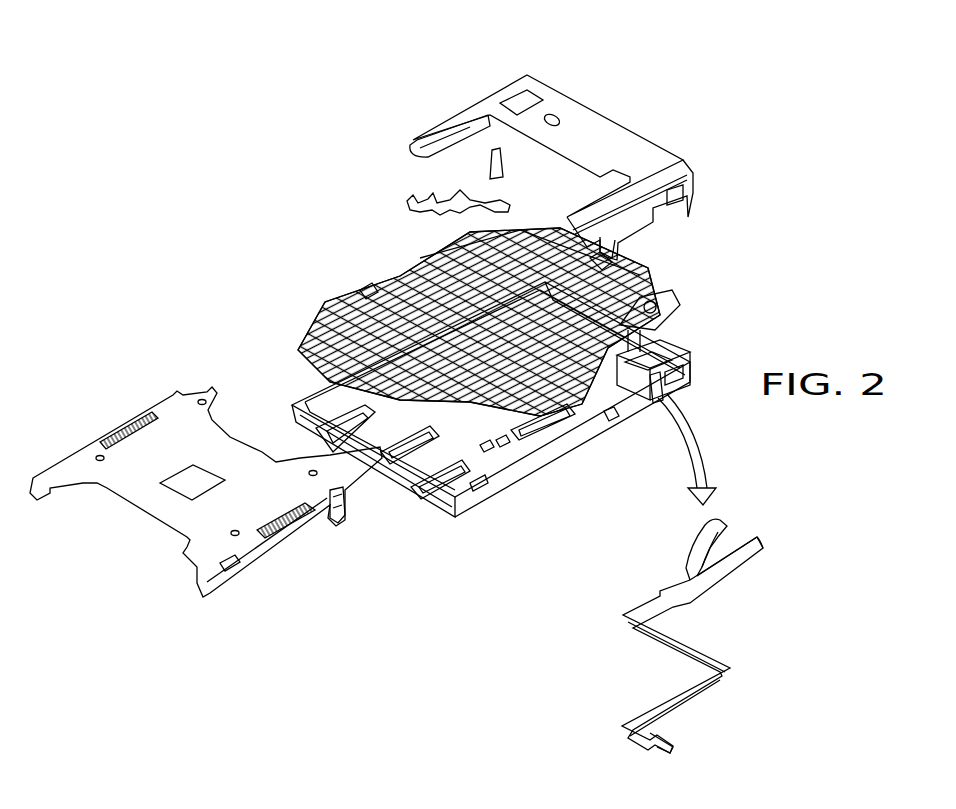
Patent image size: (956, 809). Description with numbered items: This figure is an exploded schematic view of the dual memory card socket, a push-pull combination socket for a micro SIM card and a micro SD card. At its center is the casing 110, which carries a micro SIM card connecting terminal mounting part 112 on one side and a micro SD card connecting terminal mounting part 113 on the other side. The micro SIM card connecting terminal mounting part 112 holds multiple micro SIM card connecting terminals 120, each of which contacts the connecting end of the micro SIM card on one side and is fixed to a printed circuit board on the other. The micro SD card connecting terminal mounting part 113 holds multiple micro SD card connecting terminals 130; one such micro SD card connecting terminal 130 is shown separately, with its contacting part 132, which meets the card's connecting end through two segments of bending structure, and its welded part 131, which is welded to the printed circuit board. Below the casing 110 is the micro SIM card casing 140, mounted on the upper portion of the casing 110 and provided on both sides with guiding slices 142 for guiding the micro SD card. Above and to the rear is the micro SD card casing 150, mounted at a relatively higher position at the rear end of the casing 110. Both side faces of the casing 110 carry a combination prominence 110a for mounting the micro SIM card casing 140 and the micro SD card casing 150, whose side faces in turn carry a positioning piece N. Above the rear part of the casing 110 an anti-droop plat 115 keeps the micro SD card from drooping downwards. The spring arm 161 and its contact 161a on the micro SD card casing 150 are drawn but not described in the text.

The casing 110 is at (524, 465).
The combination prominence 110a is at (592, 433).
The micro SIM card connecting terminal mounting part 112 is at (490, 497).
The micro SD card connecting terminal mounting part 113 is at (610, 418).
The anti-droop plat 115 is at (642, 332).
The micro SIM card connecting terminal 120 is at (318, 335).
The micro SD card connecting terminal 130 is at (423, 246).
The welded part 131 is at (372, 290).
The contacting part 132 is at (693, 550).
The micro SIM card casing 140 is at (177, 515).
The guiding slice 142 is at (137, 417).
The micro SD card casing 150 is at (592, 118).
The cover spring arm 161 is at (480, 178).
The spring arm contact 161a is at (510, 194).
The positioning piece N is at (343, 525).